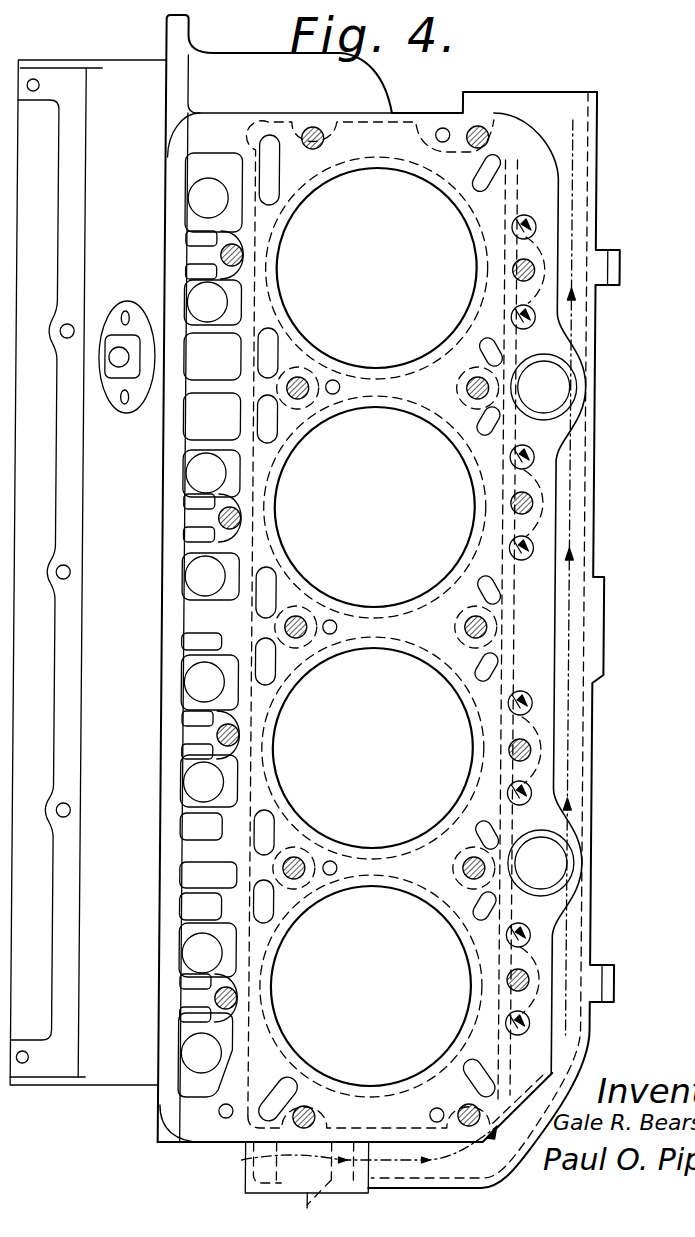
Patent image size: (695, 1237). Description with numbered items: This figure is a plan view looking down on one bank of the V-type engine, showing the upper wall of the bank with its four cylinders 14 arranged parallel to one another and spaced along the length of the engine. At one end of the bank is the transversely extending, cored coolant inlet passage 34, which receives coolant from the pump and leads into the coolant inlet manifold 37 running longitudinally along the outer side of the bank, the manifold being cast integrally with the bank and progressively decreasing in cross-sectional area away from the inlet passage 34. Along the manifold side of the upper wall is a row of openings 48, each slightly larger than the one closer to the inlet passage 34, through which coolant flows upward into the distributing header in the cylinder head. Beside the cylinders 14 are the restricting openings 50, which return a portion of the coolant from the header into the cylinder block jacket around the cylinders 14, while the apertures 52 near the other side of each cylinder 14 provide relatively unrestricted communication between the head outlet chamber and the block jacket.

The cylinders 14 is at (353, 190).
The coolant inlet passage 34 is at (300, 1157).
The coolant inlet manifold 37 is at (573, 715).
The openings 48 is at (531, 220).
The openings 50 is at (496, 163).
The apertures 52 is at (268, 148).